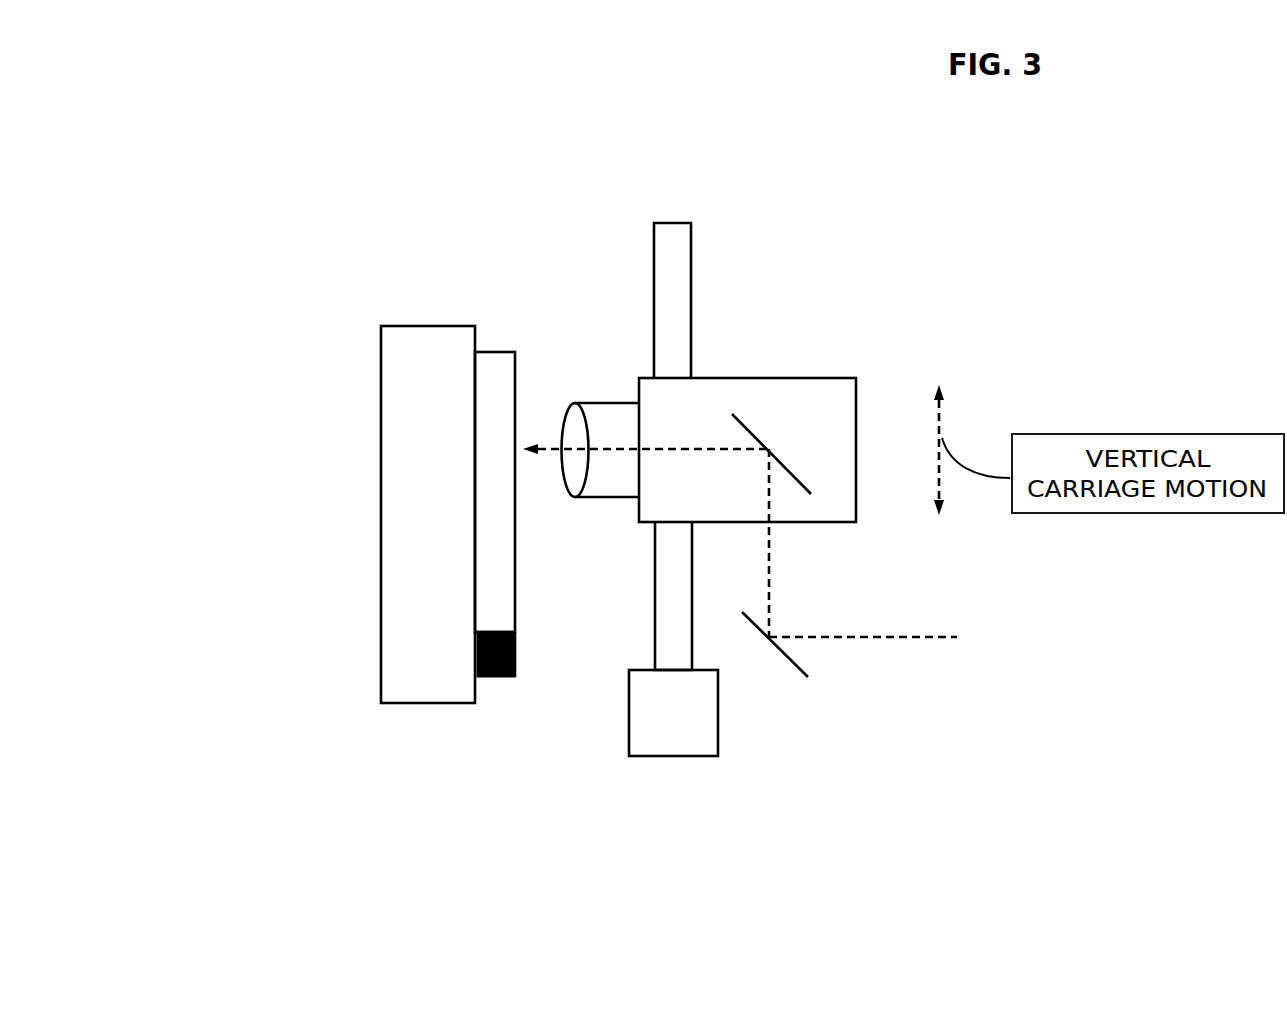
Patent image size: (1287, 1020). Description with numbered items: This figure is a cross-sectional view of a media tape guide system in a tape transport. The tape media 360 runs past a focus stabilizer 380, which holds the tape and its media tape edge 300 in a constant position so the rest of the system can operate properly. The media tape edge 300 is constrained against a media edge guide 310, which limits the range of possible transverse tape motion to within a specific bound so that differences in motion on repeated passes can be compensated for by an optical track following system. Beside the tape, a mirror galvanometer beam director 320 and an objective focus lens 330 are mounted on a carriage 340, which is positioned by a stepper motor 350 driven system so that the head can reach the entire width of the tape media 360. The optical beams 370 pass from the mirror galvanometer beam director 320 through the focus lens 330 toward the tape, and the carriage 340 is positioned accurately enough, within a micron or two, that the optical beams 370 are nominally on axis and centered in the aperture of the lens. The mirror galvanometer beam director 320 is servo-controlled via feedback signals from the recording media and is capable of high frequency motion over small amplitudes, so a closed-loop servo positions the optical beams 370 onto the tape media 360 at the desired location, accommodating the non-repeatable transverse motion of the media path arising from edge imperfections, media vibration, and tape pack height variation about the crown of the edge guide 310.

The media tape edge 300 is at (489, 620).
The media edge guide 310 is at (478, 686).
The mirror galvanometer beam director 320 is at (788, 453).
The objective (focus) lens 330 is at (567, 500).
The carriage 340 is at (742, 393).
The stepper motor 350 is at (705, 734).
The tape media 360 is at (492, 415).
The optical beams 370 is at (865, 566).
The focus stabilizer 380 is at (407, 510).